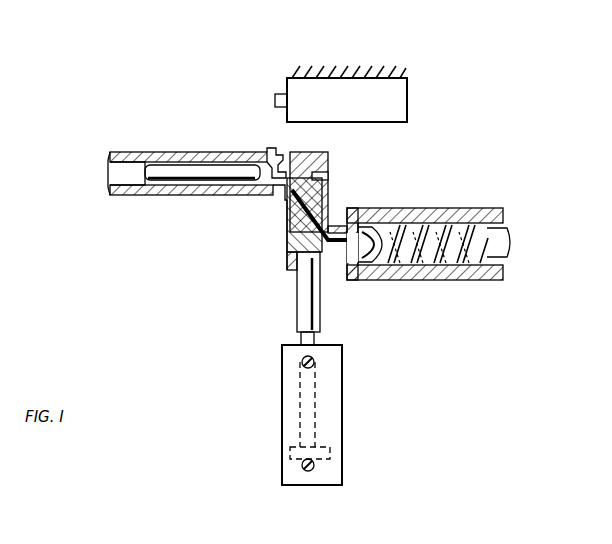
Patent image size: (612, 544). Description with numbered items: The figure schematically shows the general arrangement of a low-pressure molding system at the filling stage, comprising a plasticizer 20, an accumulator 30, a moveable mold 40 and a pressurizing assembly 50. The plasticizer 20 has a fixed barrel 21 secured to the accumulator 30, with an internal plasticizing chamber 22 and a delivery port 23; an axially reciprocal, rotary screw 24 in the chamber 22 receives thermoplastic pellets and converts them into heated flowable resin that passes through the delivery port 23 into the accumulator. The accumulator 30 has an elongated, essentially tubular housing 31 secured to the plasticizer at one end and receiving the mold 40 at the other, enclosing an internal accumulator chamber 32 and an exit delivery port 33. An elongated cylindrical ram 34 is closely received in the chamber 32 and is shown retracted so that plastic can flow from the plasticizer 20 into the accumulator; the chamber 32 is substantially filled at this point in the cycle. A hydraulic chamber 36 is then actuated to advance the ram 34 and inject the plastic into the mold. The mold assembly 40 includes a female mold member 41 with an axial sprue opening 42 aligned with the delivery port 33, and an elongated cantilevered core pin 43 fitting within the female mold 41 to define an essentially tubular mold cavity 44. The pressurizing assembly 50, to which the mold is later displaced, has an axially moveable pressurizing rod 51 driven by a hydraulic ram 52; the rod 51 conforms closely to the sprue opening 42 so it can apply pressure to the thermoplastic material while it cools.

The plasticizer 20 is at (450, 261).
The fixed barrel 21 is at (364, 212).
The internal plasticizing chamber 22 is at (398, 228).
The delivery port 23 is at (356, 268).
The rotary screw 24 is at (512, 242).
The accumulator 30 is at (301, 307).
The tubular housing 31 is at (288, 250).
The internal accumulator chamber 32 is at (328, 175).
The exit delivery port 33 is at (312, 146).
The cylindrical ram 34 is at (298, 306).
The hydraulic chamber 36 is at (284, 410).
The moveable mold 40 is at (197, 196).
The female mold member 41 is at (160, 152).
The axial sprue opening 42 is at (270, 152).
The cantilevered core pin 43 is at (176, 180).
The tubular mold cavity 44 is at (238, 181).
The pressurizing assembly 50 is at (353, 101).
The pressurizing rod 51 is at (275, 99).
The hydraulic ram 52 is at (347, 94).